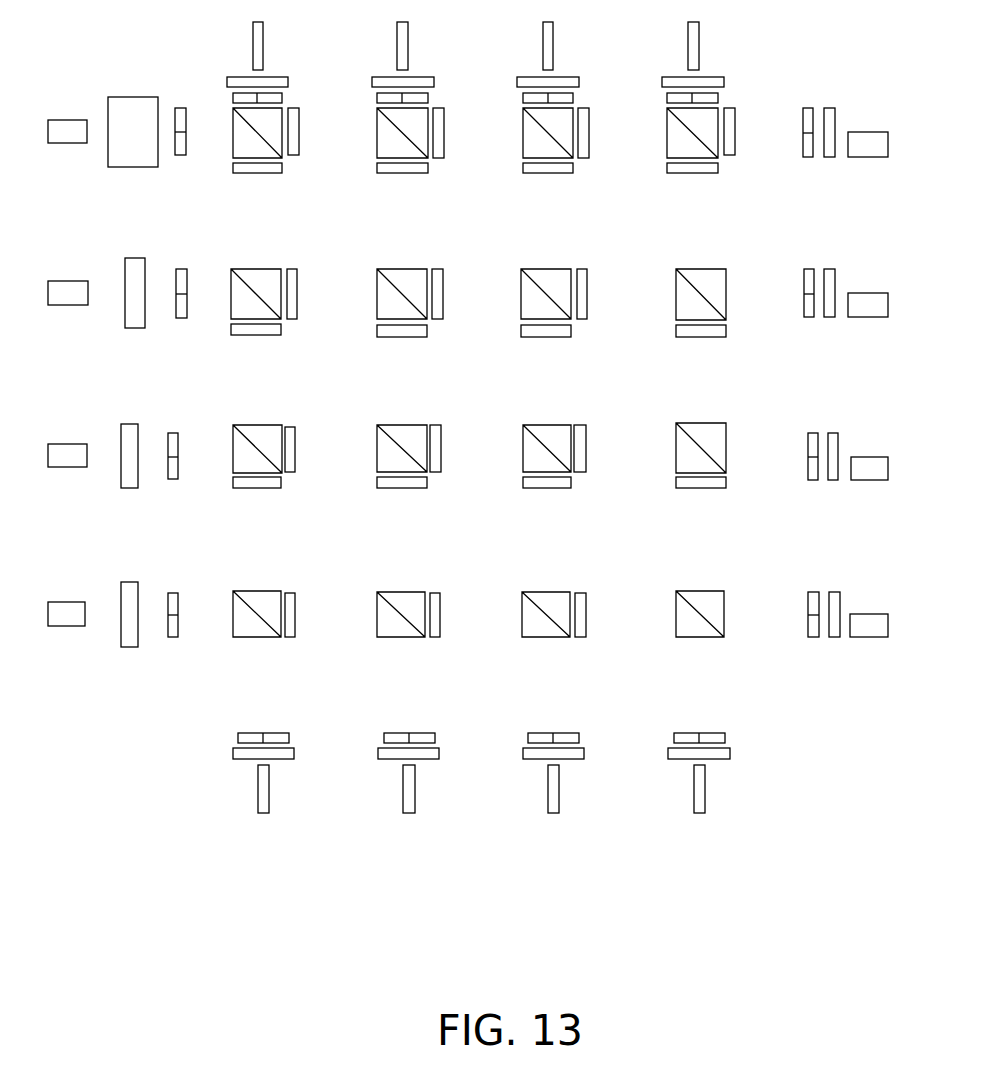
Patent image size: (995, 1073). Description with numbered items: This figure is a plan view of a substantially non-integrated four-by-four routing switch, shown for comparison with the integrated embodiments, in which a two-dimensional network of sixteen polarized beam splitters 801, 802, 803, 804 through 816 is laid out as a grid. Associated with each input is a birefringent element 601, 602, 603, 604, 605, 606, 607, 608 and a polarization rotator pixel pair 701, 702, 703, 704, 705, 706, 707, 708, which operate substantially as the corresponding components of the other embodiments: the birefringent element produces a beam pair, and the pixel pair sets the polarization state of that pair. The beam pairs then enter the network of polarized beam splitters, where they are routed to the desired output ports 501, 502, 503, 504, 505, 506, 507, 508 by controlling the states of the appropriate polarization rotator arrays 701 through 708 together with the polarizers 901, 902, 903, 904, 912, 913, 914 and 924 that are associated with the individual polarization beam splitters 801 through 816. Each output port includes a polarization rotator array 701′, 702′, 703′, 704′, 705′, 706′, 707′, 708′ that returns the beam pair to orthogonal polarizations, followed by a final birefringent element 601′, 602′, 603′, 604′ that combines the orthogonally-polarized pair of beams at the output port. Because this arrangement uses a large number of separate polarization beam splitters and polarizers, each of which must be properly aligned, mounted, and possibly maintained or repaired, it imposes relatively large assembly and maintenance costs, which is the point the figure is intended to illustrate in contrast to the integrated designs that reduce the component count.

The output port 501 is at (263, 813).
The output port 502 is at (409, 813).
The output port 503 is at (554, 813).
The output port 504 is at (699, 813).
The output port 505 is at (865, 132).
The output port 506 is at (865, 293).
The output port 507 is at (870, 457).
The output port 508 is at (868, 614).
The birefringent element 601 is at (125, 167).
The birefringent element 602 is at (130, 328).
The birefringent element 603 is at (128, 488).
The birefringent element 604 is at (128, 647).
The birefringent element 605 is at (275, 77).
The birefringent element 606 is at (413, 77).
The birefringent element 607 is at (565, 77).
The birefringent element 608 is at (710, 77).
The final birefringent element 601′ is at (278, 759).
The final birefringent element 602′ is at (424, 759).
The final birefringent element 603′ is at (572, 759).
The final birefringent element 604′ is at (720, 759).
The polarization rotator pixel pair 701 is at (180, 108).
The polarization rotator pixel pair 702 is at (181, 269).
The polarization rotator pixel pair 703 is at (173, 433).
The polarization rotator pixel pair 704 is at (173, 593).
The polarization rotator pixel pair 705 is at (282, 98).
The polarization rotator pixel pair 706 is at (430, 98).
The polarization rotator pixel pair 707 is at (575, 98).
The polarization rotator pixel pair 708 is at (720, 98).
The polarization rotator array 701′ is at (289, 738).
The polarization rotator array 702′ is at (435, 738).
The polarization rotator array 703′ is at (579, 738).
The polarization rotator array 704′ is at (725, 738).
The polarization rotator array 705′ is at (808, 108).
The polarization rotator array 706′ is at (809, 269).
The polarization rotator array 707′ is at (813, 433).
The polarization rotator array 708′ is at (814, 592).
The polarized beam splitter 801 is at (281, 157).
The polarized beam splitter 802 is at (281, 319).
The polarized beam splitter 803 is at (281, 473).
The polarized beam splitter 804 is at (280, 637).
The polarized beam splitter 816 is at (723, 637).
The polarizer 901 is at (300, 127).
The polarizer 902 is at (295, 272).
The polarizer 903 is at (293, 428).
The polarizer 904 is at (293, 594).
The polarizer 912 is at (580, 593).
The polarizer 913 is at (264, 174).
The polarizer 914 is at (403, 175).
The polarizer 924 is at (693, 488).